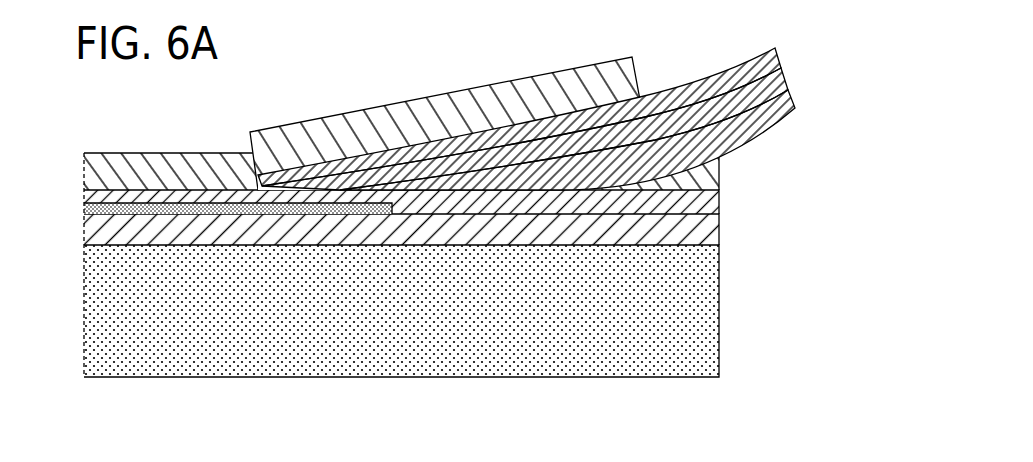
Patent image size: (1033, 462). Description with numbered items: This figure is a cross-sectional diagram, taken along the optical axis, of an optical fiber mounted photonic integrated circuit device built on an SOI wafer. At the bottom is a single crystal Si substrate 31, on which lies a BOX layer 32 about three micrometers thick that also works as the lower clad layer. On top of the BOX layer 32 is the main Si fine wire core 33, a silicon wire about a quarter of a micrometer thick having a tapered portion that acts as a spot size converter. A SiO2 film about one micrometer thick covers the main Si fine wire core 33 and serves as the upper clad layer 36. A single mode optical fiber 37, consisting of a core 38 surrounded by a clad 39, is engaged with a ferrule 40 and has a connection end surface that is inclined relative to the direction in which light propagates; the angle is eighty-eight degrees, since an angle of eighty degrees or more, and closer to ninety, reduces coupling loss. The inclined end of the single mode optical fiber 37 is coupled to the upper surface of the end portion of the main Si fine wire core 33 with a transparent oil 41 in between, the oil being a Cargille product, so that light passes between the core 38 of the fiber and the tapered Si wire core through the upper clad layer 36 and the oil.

The single crystal Si substrate 31 is at (720, 300).
The BOX layer 32 is at (717, 230).
The main Si fine wire core 33 is at (84, 210).
The upper clad layer 36 is at (718, 197).
The single mode optical fiber 37 is at (573, 103).
The core 38 is at (780, 77).
The clad 39 is at (776, 53).
The ferrule 40 is at (635, 67).
The transparent oil 41 is at (717, 166).